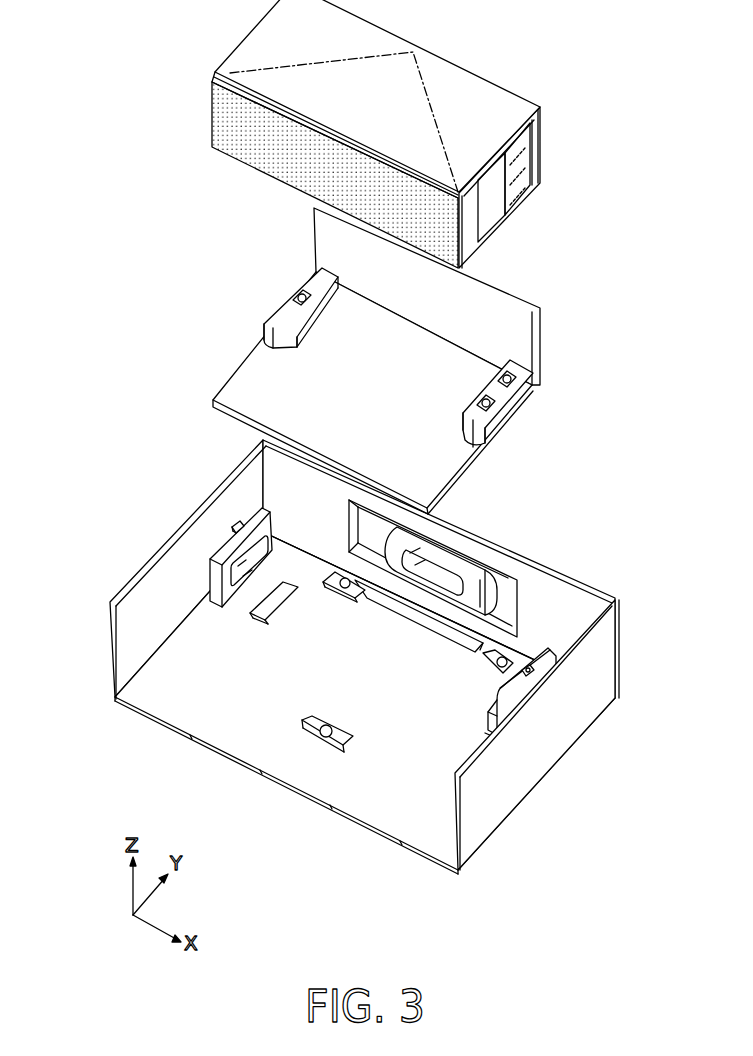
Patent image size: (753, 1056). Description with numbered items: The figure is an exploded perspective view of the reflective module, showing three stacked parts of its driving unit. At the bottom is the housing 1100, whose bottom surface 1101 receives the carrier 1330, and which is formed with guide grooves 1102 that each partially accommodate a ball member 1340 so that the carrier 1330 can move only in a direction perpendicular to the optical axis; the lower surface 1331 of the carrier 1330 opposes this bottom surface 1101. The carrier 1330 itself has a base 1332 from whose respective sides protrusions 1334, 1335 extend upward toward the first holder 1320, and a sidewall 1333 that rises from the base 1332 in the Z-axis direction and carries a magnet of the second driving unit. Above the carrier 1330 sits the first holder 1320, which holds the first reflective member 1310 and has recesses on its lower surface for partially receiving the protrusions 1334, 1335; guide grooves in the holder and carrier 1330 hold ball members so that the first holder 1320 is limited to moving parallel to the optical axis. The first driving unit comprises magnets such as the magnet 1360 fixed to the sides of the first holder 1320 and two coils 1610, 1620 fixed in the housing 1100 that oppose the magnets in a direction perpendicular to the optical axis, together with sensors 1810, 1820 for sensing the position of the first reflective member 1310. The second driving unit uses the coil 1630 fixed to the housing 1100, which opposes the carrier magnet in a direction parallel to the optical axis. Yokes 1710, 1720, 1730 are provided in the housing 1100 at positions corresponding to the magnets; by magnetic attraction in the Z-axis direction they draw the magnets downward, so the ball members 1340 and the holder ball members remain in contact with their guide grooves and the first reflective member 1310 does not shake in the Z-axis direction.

The housing 1100 is at (360, 650).
The bottom surface 1101 is at (218, 712).
The guide grooves 1102 is at (313, 800).
The first reflective member 1310 is at (373, 134).
The first holder 1320 is at (487, 95).
The carrier 1330 is at (381, 361).
The lower surface 1331 is at (455, 478).
The base 1332 is at (248, 380).
The sidewall 1333 is at (483, 332).
The protrusion 1334 is at (243, 279).
The protrusion 1335 is at (544, 405).
The ball members 1340 is at (303, 733).
The magnet 1360 is at (530, 167).
The coil 1610 is at (503, 703).
The coil 1620 is at (207, 558).
The coil 1630 is at (480, 590).
The yoke 1710 is at (500, 733).
The yoke 1720 is at (253, 617).
The yoke 1730 is at (473, 650).
The sensor 1810 is at (540, 672).
The sensor 1820 is at (240, 520).